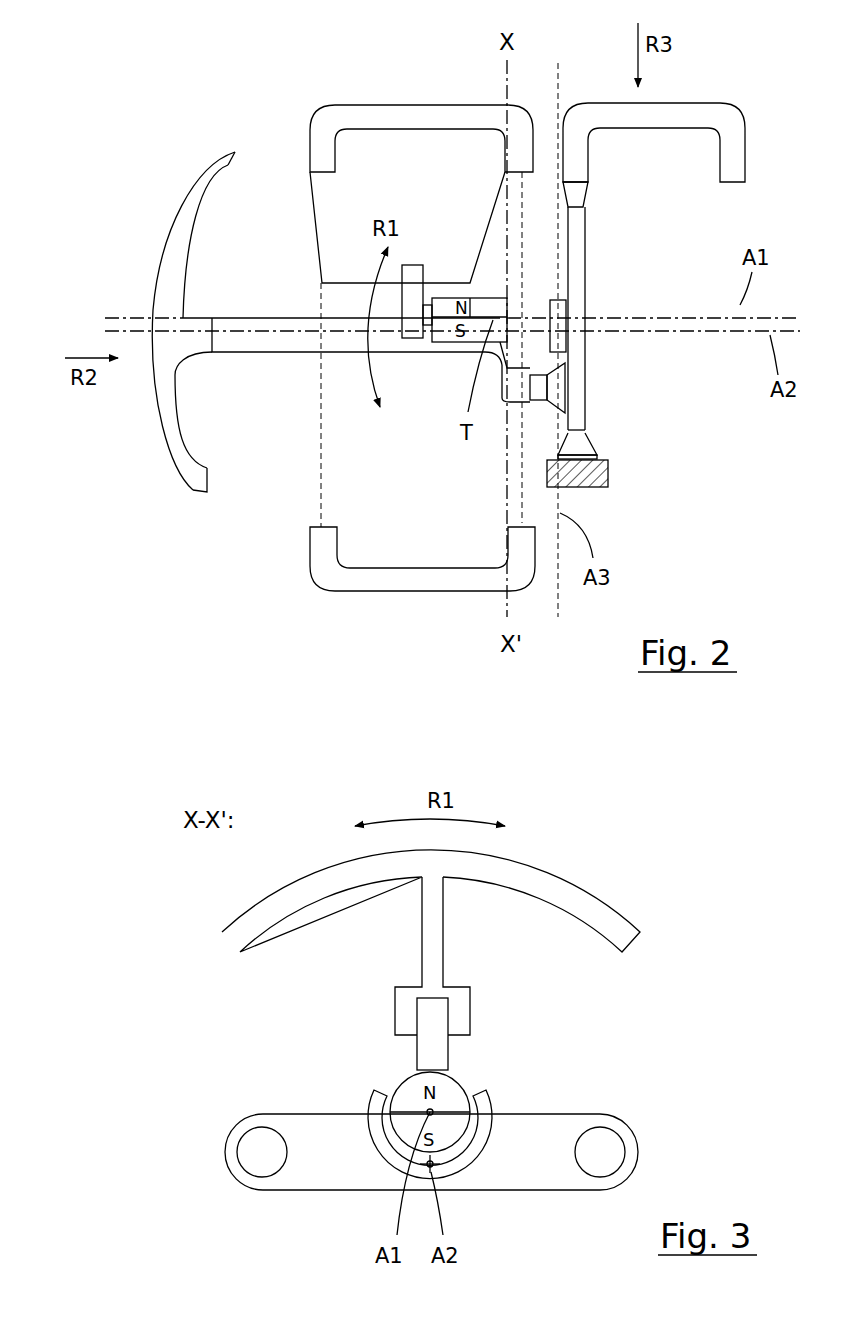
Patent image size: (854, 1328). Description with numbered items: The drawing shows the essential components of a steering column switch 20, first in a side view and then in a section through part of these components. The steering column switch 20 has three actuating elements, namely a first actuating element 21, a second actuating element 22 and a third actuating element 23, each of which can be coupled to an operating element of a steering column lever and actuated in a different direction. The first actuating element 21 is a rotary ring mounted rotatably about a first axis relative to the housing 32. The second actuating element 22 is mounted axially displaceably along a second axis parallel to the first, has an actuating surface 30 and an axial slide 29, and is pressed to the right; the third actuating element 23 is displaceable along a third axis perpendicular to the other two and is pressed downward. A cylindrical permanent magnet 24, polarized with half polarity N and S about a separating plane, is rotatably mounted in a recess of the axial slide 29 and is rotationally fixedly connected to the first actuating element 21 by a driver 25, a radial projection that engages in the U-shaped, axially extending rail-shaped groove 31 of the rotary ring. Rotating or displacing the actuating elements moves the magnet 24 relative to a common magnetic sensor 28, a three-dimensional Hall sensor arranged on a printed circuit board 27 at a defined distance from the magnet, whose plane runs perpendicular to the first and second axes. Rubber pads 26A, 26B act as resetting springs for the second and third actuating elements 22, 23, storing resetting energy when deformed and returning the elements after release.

In FIG. 2, the steering column switch 20 is at (145, 72).
In FIG. 2, the first actuating element 21 is at (423, 118).
In FIG. 3, the first actuating element 21 is at (567, 900).
In FIG. 2, the second actuating element 22 is at (165, 240).
In FIG. 2, the third actuating element 23 is at (688, 115).
In FIG. 2, the permanent magnet 24 is at (445, 337).
In FIG. 3, the permanent magnet 24 is at (458, 1078).
In FIG. 2, the driver 25 is at (415, 268).
In FIG. 3, the driver 25 is at (432, 1048).
In FIG. 2, the rubber pad 26A is at (575, 400).
In FIG. 3, the rubber pad 26A is at (605, 1153).
In FIG. 2, the rubber pad 26B is at (590, 453).
In FIG. 2, the printed circuit board 27 is at (585, 234).
In FIG. 2, the magnetic sensor 28 is at (562, 322).
In FIG. 2, the axial slide 29 is at (248, 345).
In FIG. 3, the axial slide 29 is at (553, 1140).
In FIG. 2, the actuating surface 30 is at (158, 452).
In FIG. 3, the rail-shaped groove 31 is at (430, 995).
In FIG. 2, the housing 32 is at (600, 472).